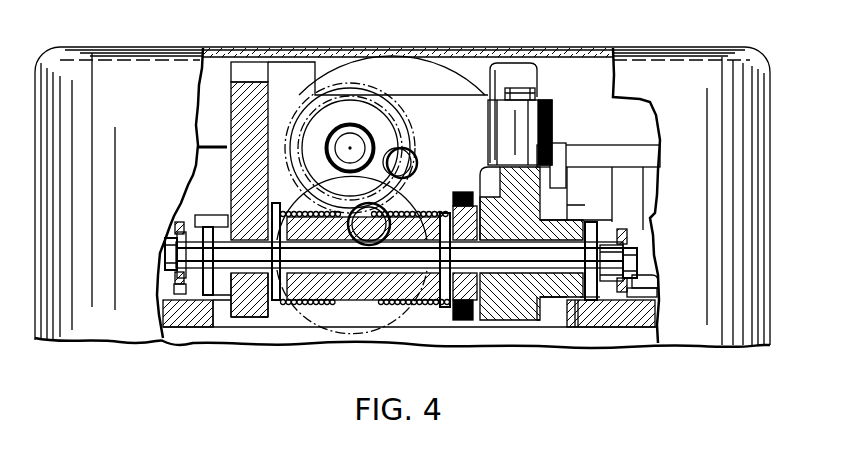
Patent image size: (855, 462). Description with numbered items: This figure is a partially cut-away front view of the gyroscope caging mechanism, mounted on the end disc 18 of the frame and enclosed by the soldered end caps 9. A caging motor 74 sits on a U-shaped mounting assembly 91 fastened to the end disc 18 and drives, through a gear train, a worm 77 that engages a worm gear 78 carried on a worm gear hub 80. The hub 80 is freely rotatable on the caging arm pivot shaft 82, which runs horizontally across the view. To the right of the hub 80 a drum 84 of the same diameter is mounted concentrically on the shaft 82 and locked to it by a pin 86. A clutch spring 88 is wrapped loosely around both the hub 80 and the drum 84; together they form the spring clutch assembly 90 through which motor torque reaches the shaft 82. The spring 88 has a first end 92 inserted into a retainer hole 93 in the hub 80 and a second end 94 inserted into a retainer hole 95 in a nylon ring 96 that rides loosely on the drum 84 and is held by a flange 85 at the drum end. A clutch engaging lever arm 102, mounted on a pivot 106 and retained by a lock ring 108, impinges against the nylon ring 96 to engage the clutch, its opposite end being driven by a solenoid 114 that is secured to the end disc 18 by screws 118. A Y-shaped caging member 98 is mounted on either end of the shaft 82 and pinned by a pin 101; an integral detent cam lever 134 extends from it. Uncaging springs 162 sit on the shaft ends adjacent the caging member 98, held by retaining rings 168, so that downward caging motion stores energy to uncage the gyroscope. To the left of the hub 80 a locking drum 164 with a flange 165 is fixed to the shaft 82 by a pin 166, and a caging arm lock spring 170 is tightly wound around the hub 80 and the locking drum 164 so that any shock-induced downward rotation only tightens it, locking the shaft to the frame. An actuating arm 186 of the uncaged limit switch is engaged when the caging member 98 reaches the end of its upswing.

The end cap 9 is at (712, 57).
The end disc 18 is at (633, 325).
The caging motor 74 is at (438, 66).
The worm 77 is at (396, 130).
The worm gear 78 is at (338, 300).
The worm gear hub 80 is at (320, 300).
The caging arm pivot shaft 82 is at (170, 257).
The drum 84 is at (500, 320).
The flange 85 is at (491, 326).
The pin 86 is at (444, 307).
The clutch spring 88 is at (398, 300).
The spring clutch assembly 90 is at (426, 306).
The U-shaped mounting assembly 91 is at (289, 62).
The first end 92 is at (385, 300).
The retainer hole 93 is at (372, 300).
The second end 94 is at (414, 166).
The retainer hole 95 is at (462, 200).
The nylon ring 96 is at (458, 320).
The Y-shaped caging member 98 is at (220, 214).
The pin 101 is at (593, 222).
The clutch engaging lever arm 102 is at (460, 150).
The pivot 106 is at (534, 92).
The lock ring 108 is at (545, 105).
The solenoid 114 is at (622, 184).
The screws 118 is at (648, 278).
The detent cam lever 134 is at (551, 157).
The uncaging springs 162 is at (180, 290).
The locking drum 164 is at (270, 317).
The flange 165 is at (246, 315).
The pin 166 is at (280, 214).
The retaining rings 168 is at (175, 224).
The caging arm lock spring 170 is at (287, 302).
The actuating arm 186 is at (218, 145).